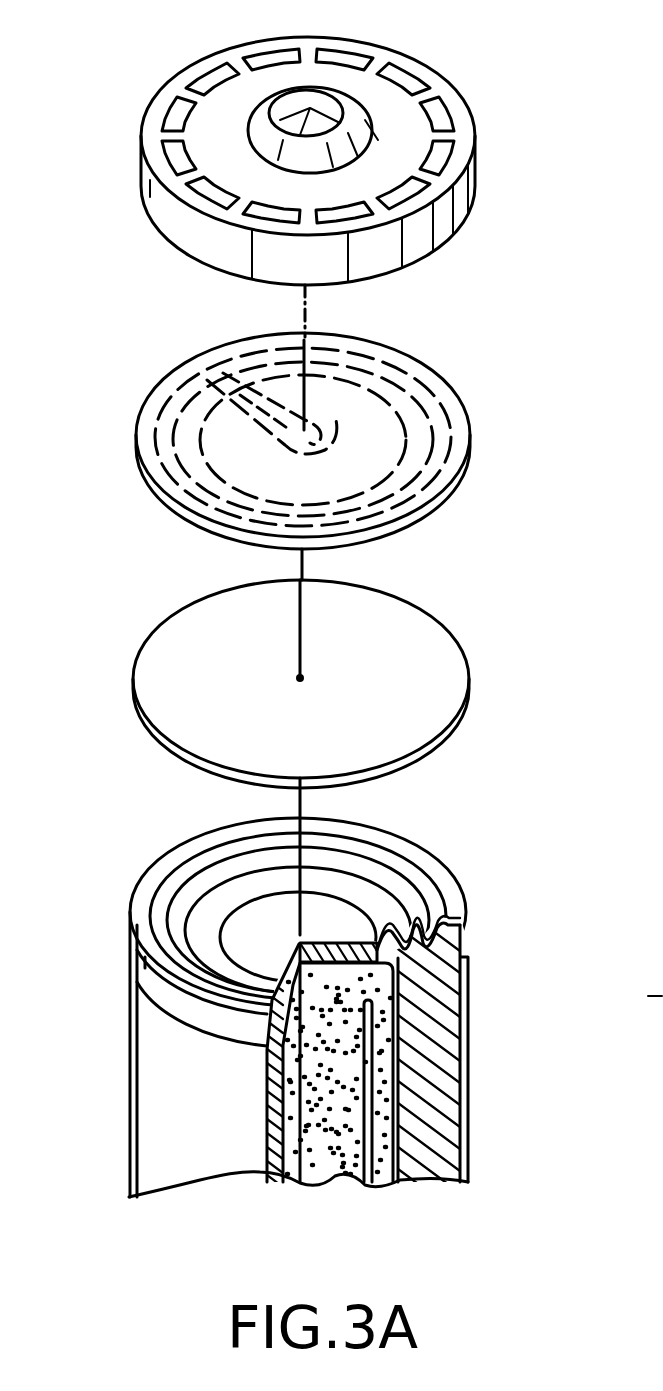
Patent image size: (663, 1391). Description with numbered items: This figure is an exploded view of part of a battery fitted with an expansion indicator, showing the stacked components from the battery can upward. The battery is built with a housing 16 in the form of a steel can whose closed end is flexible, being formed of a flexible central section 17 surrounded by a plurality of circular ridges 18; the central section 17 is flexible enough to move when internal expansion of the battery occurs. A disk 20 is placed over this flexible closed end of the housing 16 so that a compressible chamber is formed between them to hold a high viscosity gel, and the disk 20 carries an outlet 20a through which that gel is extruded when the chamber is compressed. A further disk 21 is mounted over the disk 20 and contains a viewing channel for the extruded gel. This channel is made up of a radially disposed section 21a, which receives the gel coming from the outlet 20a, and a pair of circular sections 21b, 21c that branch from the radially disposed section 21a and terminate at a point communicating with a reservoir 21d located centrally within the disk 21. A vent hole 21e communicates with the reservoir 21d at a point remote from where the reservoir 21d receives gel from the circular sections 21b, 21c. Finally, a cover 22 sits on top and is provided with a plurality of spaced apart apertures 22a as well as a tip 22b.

The housing 16 is at (316, 1004).
The central section 17 is at (402, 915).
The circular ridges 18 is at (305, 928).
The disk 20 is at (323, 690).
The outlet 20a is at (305, 677).
The disk 21 is at (305, 411).
The radially disposed section 21a is at (250, 393).
The circular section 21b is at (175, 423).
The circular section 21c is at (418, 473).
The reservoir 21d is at (350, 418).
The vent hole 21e is at (217, 408).
The cover 22 is at (336, 142).
The apertures 22a is at (402, 82).
The tip 22b is at (282, 108).